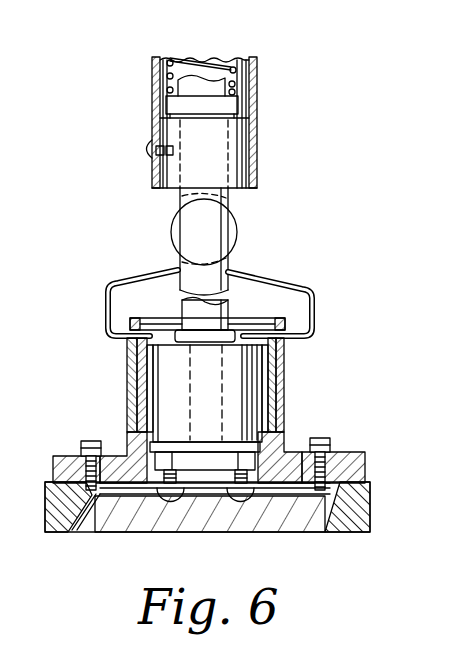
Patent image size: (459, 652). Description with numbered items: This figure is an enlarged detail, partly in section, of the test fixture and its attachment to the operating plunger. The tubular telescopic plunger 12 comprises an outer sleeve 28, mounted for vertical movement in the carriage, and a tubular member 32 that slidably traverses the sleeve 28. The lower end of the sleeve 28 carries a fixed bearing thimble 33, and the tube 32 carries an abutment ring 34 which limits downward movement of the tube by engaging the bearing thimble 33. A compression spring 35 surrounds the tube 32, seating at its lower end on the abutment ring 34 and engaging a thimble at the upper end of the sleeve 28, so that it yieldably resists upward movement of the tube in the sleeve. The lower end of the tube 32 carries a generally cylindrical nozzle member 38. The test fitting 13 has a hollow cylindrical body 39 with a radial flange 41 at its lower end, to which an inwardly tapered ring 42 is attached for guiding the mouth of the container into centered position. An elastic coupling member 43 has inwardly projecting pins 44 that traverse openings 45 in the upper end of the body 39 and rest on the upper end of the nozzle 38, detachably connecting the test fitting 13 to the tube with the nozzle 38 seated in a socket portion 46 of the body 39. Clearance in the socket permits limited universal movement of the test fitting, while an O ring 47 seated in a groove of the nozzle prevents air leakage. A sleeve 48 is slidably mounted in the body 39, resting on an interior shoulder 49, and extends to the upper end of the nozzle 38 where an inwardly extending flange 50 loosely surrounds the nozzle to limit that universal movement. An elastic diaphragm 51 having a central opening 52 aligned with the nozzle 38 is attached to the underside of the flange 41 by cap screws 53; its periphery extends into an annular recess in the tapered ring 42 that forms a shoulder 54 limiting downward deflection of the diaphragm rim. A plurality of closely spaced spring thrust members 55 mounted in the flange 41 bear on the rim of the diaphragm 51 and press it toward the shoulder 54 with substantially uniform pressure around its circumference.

The tubular telescopic plunger 12 is at (150, 94).
The test fitting 13 is at (288, 391).
The outer sleeve 28 is at (253, 142).
The tubular member 32 is at (205, 75).
The bearing thimble 33 is at (245, 160).
The abutment ring 34 is at (238, 105).
The compression spring 35 is at (238, 70).
The nozzle member 38 is at (248, 417).
The hollow cylindrical body 39 is at (146, 392).
The radial flange 41 is at (70, 458).
The inwardly tapered ring 42 is at (70, 500).
The elastic coupling member 43 is at (118, 282).
The inwardly projecting pins 44 is at (122, 333).
The openings 45 is at (288, 333).
The socket portion 46 is at (122, 446).
The O ring 47 is at (200, 455).
The sleeve 48 is at (285, 370).
The interior shoulder 49 is at (282, 447).
The inwardly extending flange 50 is at (133, 348).
The elastic diaphragm 51 is at (128, 494).
The central opening 52 is at (246, 497).
The cap screws 53 is at (252, 478).
The shoulder 54 is at (88, 500).
The spring thrust members 55 is at (332, 460).